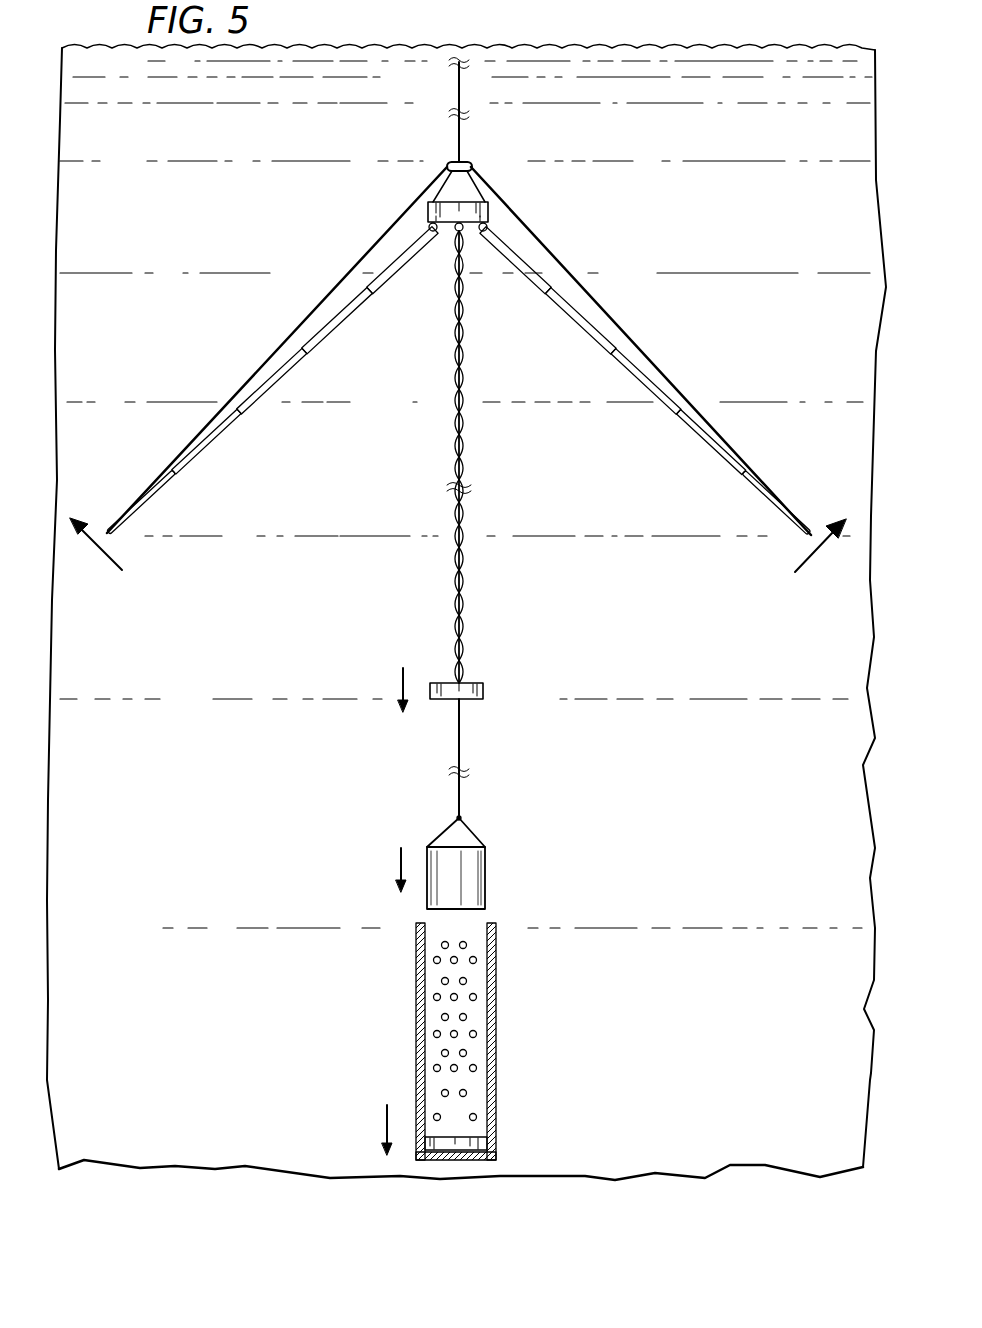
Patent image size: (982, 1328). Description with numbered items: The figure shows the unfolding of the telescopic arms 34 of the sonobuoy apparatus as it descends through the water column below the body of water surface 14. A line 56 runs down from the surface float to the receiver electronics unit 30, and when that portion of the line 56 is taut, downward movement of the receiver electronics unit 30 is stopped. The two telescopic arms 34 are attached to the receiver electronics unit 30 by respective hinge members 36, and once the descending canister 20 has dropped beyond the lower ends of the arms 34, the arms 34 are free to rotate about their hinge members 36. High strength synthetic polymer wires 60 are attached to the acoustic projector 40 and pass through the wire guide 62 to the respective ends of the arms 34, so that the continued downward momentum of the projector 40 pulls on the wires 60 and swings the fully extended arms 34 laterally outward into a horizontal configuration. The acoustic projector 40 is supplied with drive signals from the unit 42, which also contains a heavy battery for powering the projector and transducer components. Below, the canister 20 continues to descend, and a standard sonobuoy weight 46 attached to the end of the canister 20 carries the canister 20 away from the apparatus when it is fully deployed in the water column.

The body of water 14 is at (672, 72).
The line 56 is at (458, 88).
The wire guide 62 is at (468, 165).
The receiver electronics unit 30 is at (490, 212).
The hinge members 36 is at (433, 232).
The high strength synthetic polymer wires 60 is at (333, 282).
The telescopic arms 34 is at (228, 427).
The acoustic projector 40 is at (483, 691).
The drive signal unit 42 is at (485, 878).
The canister 20 is at (496, 1050).
The sonobuoy weight 46 is at (482, 1137).